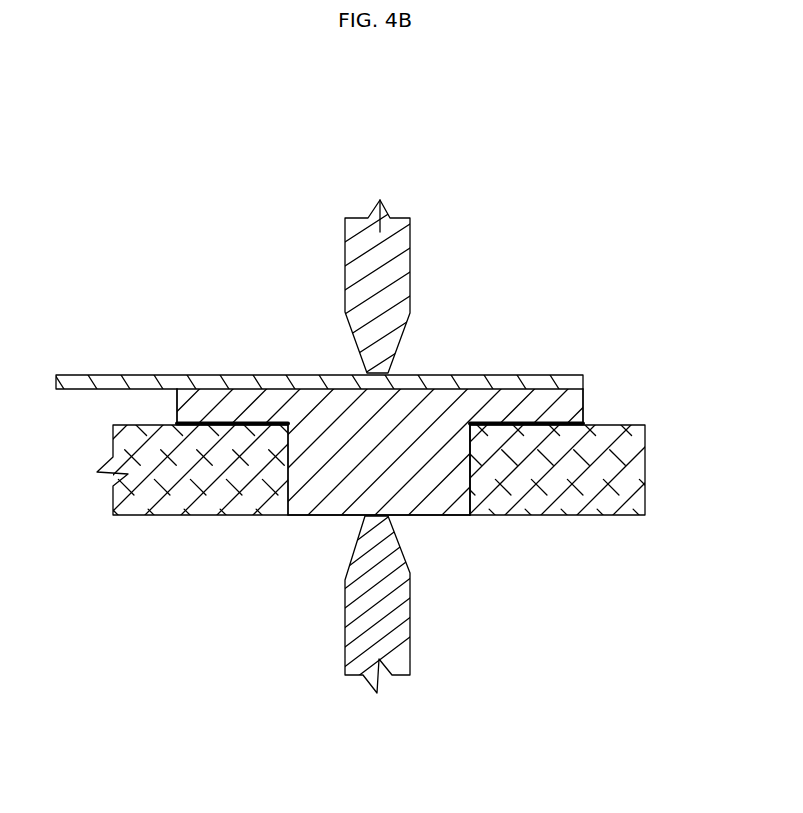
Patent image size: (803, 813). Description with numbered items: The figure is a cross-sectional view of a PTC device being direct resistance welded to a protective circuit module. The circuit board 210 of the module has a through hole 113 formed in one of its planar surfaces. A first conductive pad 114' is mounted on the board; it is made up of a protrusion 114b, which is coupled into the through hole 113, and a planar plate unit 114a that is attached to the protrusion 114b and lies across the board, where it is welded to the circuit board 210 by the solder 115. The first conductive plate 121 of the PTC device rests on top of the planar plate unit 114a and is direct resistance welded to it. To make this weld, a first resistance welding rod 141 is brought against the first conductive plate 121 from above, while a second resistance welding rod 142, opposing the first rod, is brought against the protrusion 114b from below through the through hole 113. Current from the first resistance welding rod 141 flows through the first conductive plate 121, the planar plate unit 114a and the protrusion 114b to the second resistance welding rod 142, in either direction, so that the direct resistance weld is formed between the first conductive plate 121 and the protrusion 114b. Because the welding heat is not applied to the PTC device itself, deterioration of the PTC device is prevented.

The first resistance welding rod 141 is at (398, 218).
The second resistance welding rod 142 is at (399, 669).
The first conductive plate 121 is at (120, 375).
The first conductive pad 114' is at (403, 355).
The planar plate unit 114a is at (557, 400).
The protrusion 114b is at (425, 463).
The solder 115 is at (261, 423).
The circuit board 210 is at (134, 498).
The through hole 113 is at (470, 468).